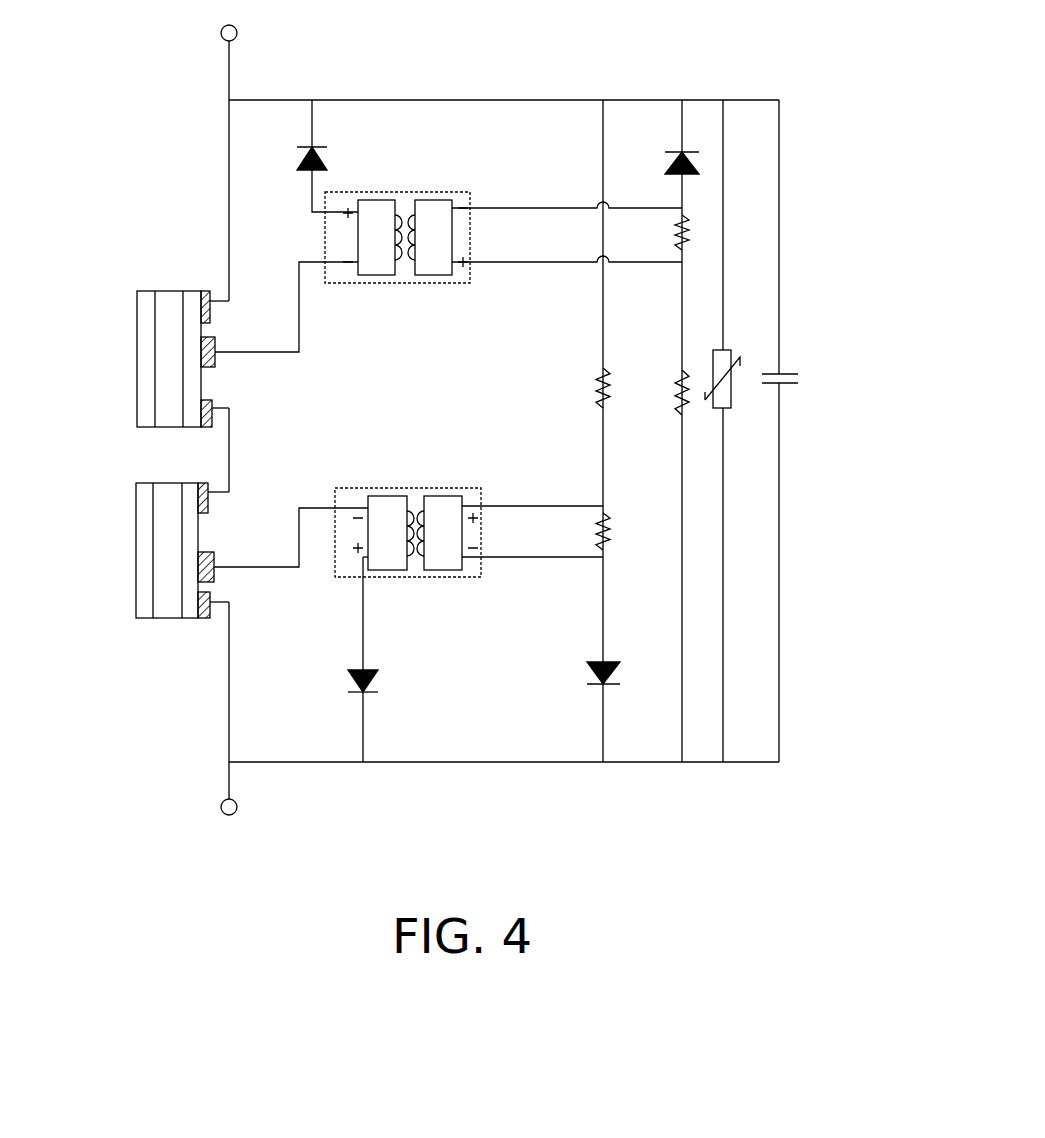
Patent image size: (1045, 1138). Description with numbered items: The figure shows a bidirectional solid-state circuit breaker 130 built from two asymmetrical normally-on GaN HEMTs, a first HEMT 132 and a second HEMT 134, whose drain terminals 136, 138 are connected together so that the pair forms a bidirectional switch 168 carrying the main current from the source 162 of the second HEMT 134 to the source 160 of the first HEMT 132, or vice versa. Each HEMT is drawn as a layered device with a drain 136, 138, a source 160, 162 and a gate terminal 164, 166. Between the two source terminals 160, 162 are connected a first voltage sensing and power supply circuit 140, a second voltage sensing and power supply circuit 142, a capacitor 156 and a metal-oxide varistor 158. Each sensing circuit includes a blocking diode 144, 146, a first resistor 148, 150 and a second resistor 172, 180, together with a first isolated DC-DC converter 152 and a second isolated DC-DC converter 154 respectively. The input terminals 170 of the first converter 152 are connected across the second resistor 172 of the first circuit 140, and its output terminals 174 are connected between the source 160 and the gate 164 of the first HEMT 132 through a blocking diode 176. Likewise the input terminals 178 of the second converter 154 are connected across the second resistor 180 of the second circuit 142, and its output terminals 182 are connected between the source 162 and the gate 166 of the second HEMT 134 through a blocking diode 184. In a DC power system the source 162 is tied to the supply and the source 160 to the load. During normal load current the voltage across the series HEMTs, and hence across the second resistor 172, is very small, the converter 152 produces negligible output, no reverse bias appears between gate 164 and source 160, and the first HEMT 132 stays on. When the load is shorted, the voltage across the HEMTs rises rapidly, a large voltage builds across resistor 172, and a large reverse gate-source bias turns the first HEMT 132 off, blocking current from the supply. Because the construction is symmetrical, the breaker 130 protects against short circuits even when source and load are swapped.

The bidirectional solid-state circuit breaker 130 is at (627, 76).
The first asymmetrical normally-on HEMT 132 is at (142, 604).
The second asymmetrical normally-on HEMT 134 is at (148, 411).
The drain terminal 136 is at (208, 500).
The drain terminal 138 is at (205, 400).
The first voltage sensing and power supply circuit 140 is at (813, 565).
The second voltage sensing and power supply circuit 142 is at (813, 242).
The blocking diode 144 is at (607, 660).
The blocking diode 146 is at (682, 151).
The first resistor 148 is at (608, 368).
The first resistor 150 is at (690, 414).
The first isolated DC-DC converter 152 is at (471, 488).
The second isolated DC-DC converter 154 is at (470, 192).
The capacitor 156 is at (787, 372).
The metal-oxide varistor 158 is at (733, 395).
The source 160 is at (205, 616).
The source 162 is at (205, 291).
The gate terminal 164 is at (214, 567).
The gate terminal 166 is at (206, 337).
The bidirectional switch 168 is at (117, 161).
The input terminals 170 is at (478, 557).
The second resistor 172 is at (608, 515).
The output terminals 174 is at (338, 510).
The blocking diode 176 is at (364, 668).
The input terminals 178 is at (472, 262).
The second resistor 180 is at (690, 226).
The output terminals 182 is at (324, 214).
The blocking diode 184 is at (316, 148).